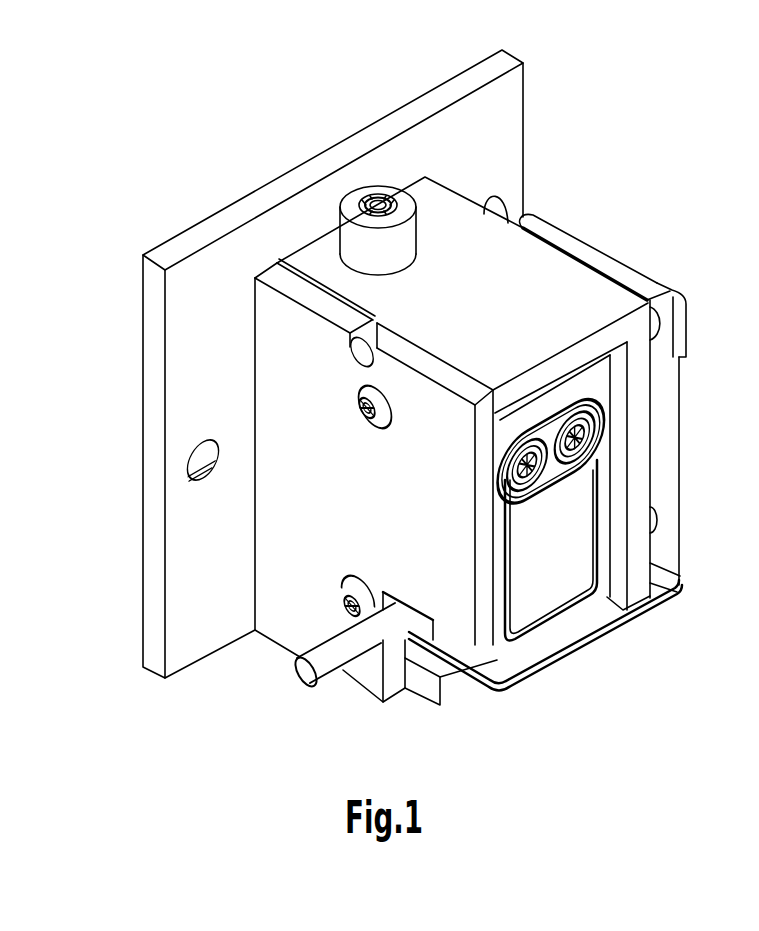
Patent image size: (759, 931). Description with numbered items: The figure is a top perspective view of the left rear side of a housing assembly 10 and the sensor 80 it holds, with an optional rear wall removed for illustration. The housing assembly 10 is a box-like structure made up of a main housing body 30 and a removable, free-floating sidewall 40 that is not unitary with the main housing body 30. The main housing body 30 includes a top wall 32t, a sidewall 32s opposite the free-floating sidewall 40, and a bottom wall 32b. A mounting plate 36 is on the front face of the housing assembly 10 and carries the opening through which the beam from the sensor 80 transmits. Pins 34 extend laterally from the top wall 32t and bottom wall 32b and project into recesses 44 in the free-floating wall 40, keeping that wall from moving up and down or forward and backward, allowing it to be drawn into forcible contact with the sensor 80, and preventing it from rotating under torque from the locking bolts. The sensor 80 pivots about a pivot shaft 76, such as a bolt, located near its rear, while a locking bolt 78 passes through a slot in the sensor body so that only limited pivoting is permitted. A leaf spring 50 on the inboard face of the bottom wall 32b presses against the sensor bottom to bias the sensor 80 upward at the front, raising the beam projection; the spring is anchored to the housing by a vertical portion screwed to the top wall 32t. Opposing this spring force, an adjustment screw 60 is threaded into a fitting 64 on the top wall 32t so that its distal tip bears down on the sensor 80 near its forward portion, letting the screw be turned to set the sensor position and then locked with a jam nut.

The housing assembly 10 is at (660, 95).
The main housing body 30 is at (562, 307).
The top wall 32t is at (500, 280).
The sidewall 32s is at (640, 465).
The bottom wall 32b is at (457, 683).
The pins 34 is at (360, 352).
The mounting plate 36 is at (190, 322).
The free-floating sidewall 40 is at (389, 508).
The recesses 44 is at (357, 366).
The leaf spring 50 is at (585, 645).
The adjustment screw 60 is at (375, 200).
The fitting 64 is at (357, 243).
The pivot shaft 76 is at (342, 596).
The locking bolt 78 is at (365, 425).
The sensor 80 is at (583, 383).